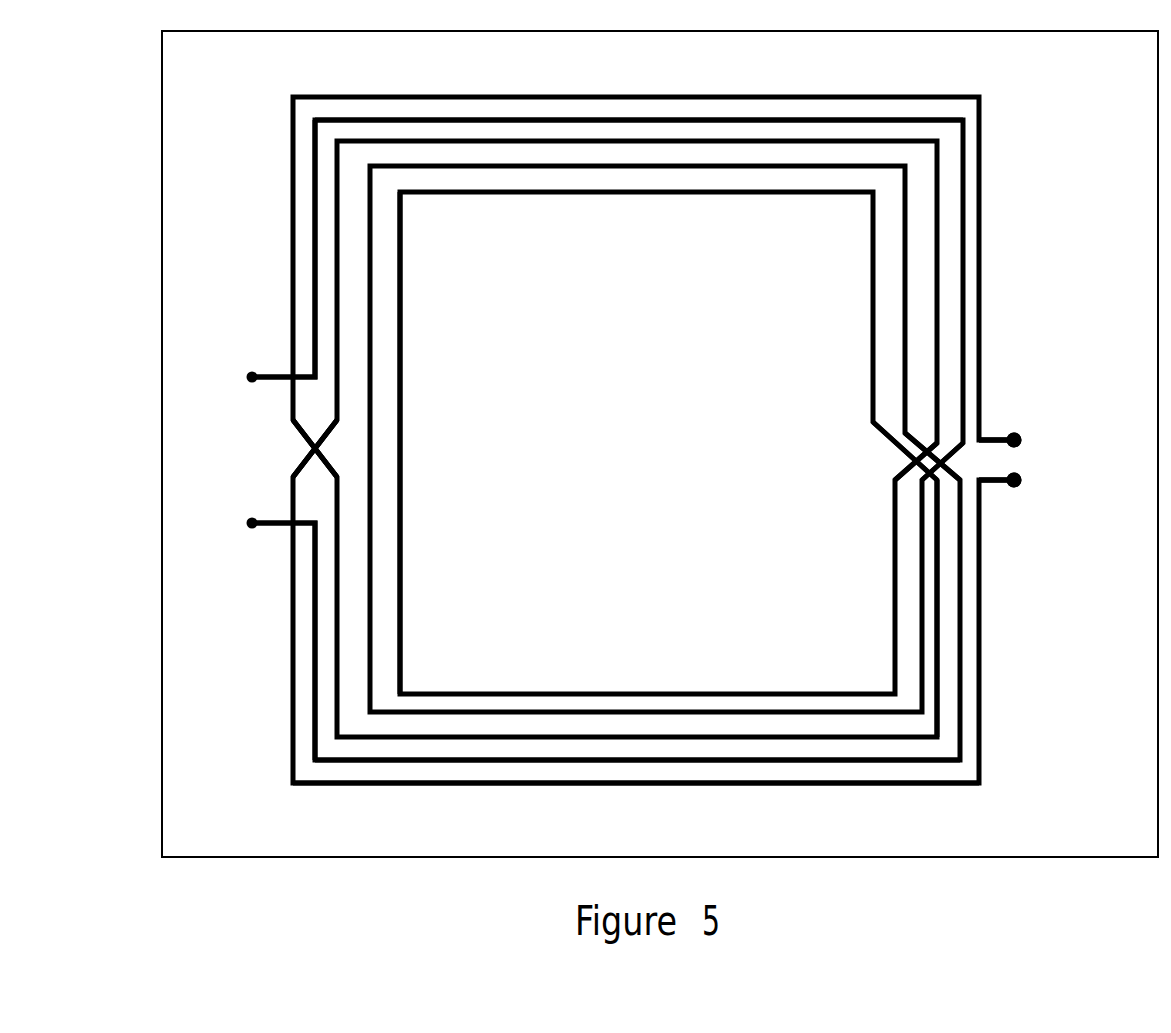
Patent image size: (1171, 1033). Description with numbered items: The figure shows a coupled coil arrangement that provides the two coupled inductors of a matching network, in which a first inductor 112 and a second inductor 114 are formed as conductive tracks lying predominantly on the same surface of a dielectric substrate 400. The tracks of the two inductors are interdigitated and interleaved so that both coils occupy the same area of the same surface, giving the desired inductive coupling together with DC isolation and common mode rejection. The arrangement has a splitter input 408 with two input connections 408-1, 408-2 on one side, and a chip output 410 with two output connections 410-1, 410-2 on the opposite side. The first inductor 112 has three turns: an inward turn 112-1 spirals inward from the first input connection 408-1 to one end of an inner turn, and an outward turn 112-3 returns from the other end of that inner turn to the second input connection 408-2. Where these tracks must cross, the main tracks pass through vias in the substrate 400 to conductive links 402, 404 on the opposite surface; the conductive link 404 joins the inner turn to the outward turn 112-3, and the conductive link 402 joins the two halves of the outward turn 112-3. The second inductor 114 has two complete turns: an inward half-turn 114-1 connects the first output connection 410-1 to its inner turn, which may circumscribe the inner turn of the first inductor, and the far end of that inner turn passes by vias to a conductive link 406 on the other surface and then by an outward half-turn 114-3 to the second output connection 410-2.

The dielectric substrate 400 is at (140, 584).
The first inductor 112 is at (980, 277).
The inward turn 112-1 is at (522, 785).
The outward turn 112-3 is at (403, 630).
The second inductor 114 is at (313, 245).
The inward half-turn 114-1 is at (558, 120).
The outward half-turn 114-3 is at (742, 762).
The conductive link 402 is at (308, 443).
The conductive link 404 is at (883, 427).
The conductive link 406 is at (908, 442).
The splitter input 408 is at (1041, 420).
The first input connection 408-1 is at (1022, 483).
The second input connection 408-2 is at (1022, 443).
The chip output 410 is at (263, 460).
The first output connection 410-1 is at (313, 374).
The second output connection 410-2 is at (313, 530).